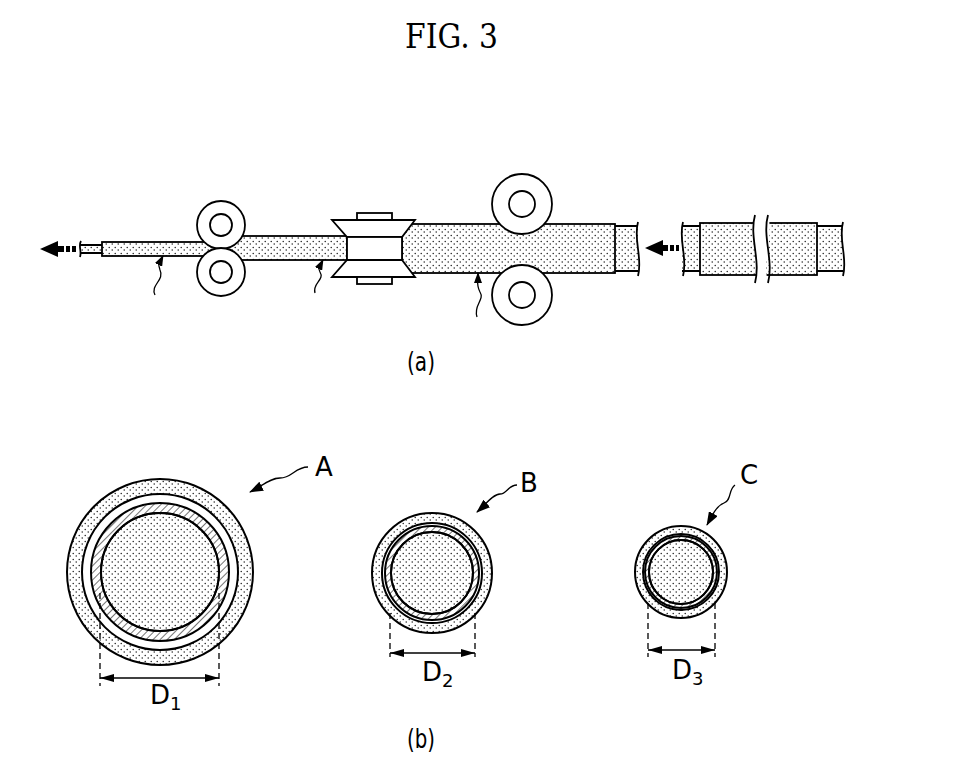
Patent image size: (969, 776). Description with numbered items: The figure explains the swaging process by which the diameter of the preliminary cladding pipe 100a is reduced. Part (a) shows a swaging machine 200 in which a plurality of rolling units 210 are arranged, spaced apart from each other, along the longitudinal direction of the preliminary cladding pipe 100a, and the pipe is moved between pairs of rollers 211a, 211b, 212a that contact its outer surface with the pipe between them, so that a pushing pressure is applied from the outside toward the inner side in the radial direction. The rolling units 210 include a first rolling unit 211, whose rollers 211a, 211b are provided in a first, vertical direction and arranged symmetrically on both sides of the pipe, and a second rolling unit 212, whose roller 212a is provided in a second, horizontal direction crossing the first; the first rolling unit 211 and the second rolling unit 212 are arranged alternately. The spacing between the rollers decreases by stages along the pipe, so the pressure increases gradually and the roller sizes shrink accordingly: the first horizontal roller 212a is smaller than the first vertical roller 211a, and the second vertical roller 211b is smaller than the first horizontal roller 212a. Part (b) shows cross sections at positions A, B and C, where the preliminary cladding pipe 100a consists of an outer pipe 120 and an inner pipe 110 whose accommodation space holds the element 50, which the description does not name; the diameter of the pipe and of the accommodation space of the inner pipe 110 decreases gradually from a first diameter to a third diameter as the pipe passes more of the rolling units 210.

The swaging machine 200 is at (165, 190).
The rolling unit 210 is at (543, 100).
The first rolling unit 211 is at (223, 198).
The first vertical roller 211a is at (533, 188).
The second vertical roller 211b is at (233, 217).
The second rolling unit 212 is at (377, 212).
The first horizontal roller 212a is at (407, 218).
The core wire 50 is at (623, 230).
The preliminary cladding pipe 100a is at (798, 217).
The inner pipe 110 is at (217, 543).
The outer pipe 120 is at (247, 572).